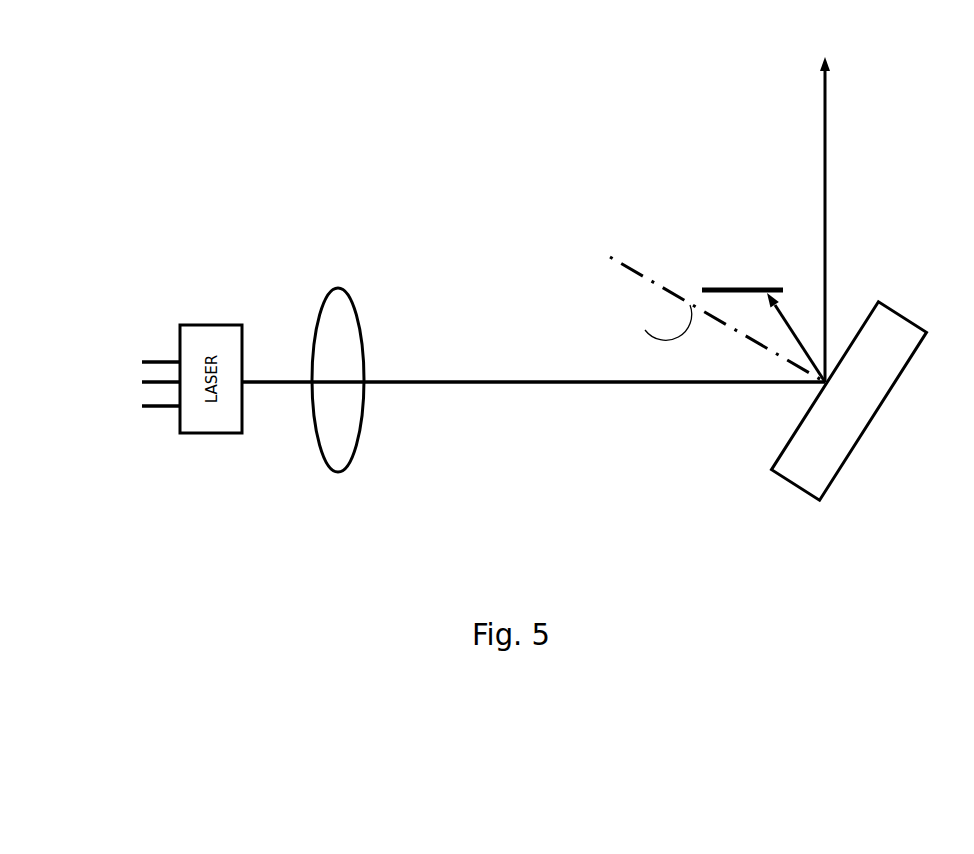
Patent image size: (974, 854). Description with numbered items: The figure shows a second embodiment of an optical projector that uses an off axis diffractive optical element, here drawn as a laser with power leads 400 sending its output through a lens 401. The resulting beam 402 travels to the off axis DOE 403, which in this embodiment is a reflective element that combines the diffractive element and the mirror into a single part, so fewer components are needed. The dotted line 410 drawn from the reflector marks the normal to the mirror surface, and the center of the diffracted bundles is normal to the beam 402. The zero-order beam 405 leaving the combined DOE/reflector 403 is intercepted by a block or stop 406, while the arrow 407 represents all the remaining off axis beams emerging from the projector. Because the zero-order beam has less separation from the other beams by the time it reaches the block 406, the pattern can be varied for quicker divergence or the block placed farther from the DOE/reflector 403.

The laser power input leads 400 is at (134, 335).
The lens 401 is at (294, 300).
The beam 402 is at (533, 362).
The off axis DOE 403 is at (895, 380).
The 0th order beam 405 is at (815, 328).
The block 406 is at (705, 275).
The off axis beams 407 is at (826, 197).
The normal to the mirror surface 410 is at (706, 319).